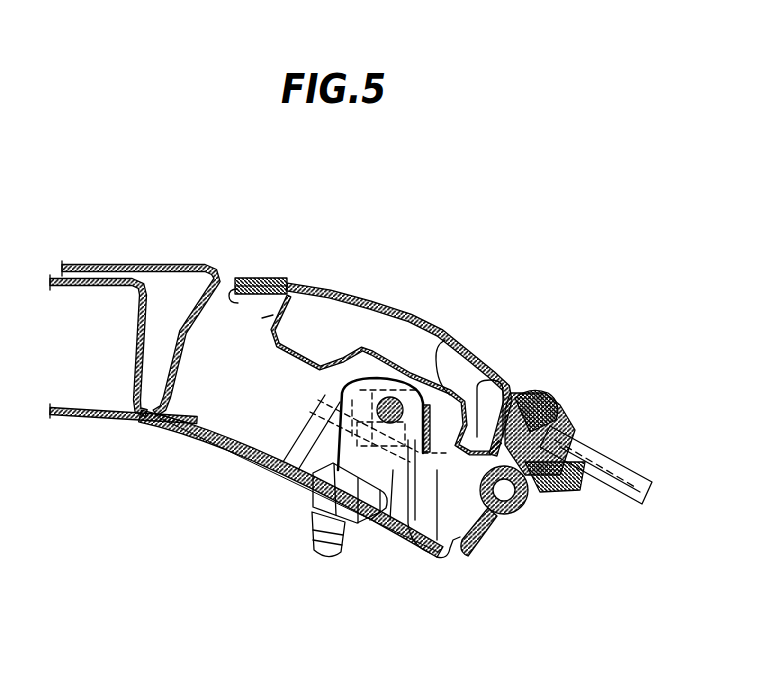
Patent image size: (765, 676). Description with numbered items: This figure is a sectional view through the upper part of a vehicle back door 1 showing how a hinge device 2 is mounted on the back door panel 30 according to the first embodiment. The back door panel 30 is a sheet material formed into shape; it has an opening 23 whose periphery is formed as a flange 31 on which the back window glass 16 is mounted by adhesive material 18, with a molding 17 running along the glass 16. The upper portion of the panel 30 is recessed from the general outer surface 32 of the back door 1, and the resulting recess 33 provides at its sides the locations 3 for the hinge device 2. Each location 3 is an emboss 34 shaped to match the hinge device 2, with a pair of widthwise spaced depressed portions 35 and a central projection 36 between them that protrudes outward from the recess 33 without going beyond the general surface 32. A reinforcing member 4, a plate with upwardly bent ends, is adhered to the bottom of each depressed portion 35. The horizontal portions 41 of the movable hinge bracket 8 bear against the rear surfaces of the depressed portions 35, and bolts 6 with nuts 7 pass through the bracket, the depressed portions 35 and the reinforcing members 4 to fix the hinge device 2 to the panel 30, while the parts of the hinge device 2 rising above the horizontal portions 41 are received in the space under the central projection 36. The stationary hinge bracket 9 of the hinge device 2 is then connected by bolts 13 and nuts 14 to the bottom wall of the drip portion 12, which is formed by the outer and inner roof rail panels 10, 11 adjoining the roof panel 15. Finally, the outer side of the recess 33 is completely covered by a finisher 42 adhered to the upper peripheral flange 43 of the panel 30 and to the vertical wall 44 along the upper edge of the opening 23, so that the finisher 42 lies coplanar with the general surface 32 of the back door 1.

The back door 1 is at (495, 356).
The hinge device 2 is at (415, 500).
The location 3 is at (434, 478).
The reinforcing member 4 is at (390, 397).
The bolt 6 is at (372, 538).
The nut 7 is at (405, 375).
The movable hinge bracket 8 is at (460, 400).
The stationary hinge bracket 9 is at (303, 490).
The outer roof rail panel 10 is at (140, 333).
The inner roof rail panel 11 is at (97, 418).
The drip portion 12 is at (230, 455).
The bolt 13 is at (312, 497).
The nut 14 is at (318, 515).
The roof panel 15 is at (150, 265).
The back window glass 16 is at (605, 465).
The molding 17 is at (555, 410).
The adhesive material 18 is at (570, 482).
The opening 23 is at (645, 565).
The back door panel 30 is at (264, 317).
The flange 31 is at (530, 500).
The general outer surface 32 is at (590, 440).
The recess 33 is at (342, 290).
The emboss 34 is at (400, 380).
The depressed portion 35 is at (280, 470).
The central projection 36 is at (430, 375).
The horizontal portion 41 is at (390, 475).
The finisher 42 is at (308, 292).
The upper peripheral flange 43 is at (232, 297).
The vertical wall 44 is at (517, 398).